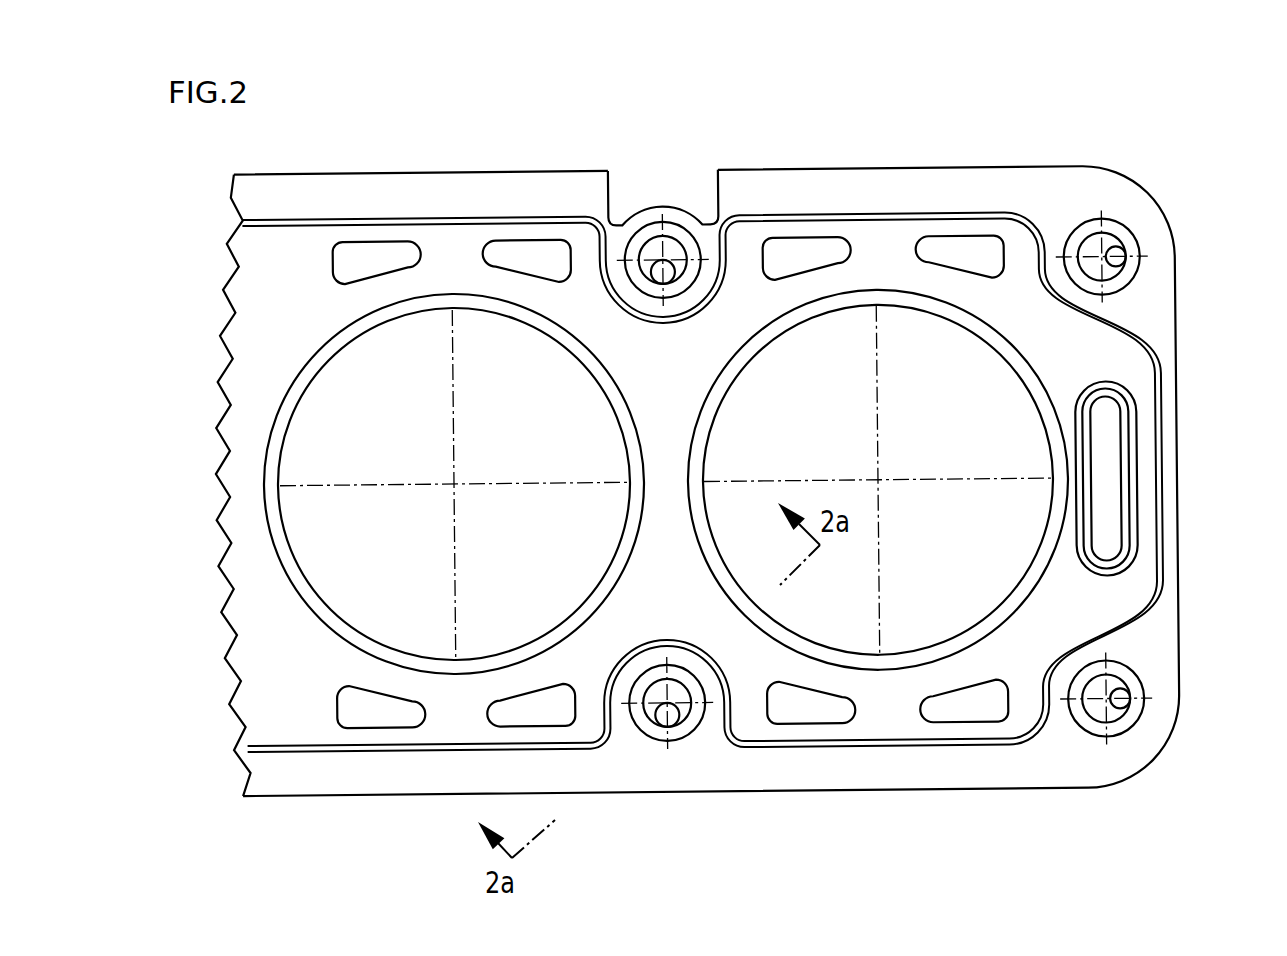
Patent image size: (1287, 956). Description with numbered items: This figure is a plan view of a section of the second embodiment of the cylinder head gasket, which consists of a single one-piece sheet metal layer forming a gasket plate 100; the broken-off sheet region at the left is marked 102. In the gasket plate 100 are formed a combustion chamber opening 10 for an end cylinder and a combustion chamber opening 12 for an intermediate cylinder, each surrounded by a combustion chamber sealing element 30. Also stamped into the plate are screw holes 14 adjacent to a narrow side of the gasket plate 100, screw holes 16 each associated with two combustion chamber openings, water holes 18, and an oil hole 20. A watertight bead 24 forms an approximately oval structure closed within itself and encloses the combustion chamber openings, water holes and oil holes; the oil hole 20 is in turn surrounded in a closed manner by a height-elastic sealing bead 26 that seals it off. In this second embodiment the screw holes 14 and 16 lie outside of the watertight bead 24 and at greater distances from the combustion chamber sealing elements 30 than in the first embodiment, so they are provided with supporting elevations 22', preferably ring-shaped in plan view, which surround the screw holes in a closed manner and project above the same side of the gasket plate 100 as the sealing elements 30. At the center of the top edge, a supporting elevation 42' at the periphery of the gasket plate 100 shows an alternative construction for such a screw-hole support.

The gasket plate 100 is at (707, 420).
The gasket sheet metal layer 102 is at (295, 327).
The combustion chamber opening 10 is at (853, 457).
The combustion chamber opening 12 is at (493, 457).
The screw hole 14 is at (1120, 266).
The screw hole 16 is at (676, 278).
The water hole 18 is at (378, 252).
The oil hole 20 is at (1113, 473).
The supporting elevation 22' is at (930, 478).
The watertight bead 24 is at (300, 222).
The sealing bead 26 is at (1130, 432).
The combustion chamber sealing element 30 is at (290, 604).
The supporting elevation 42' is at (636, 164).